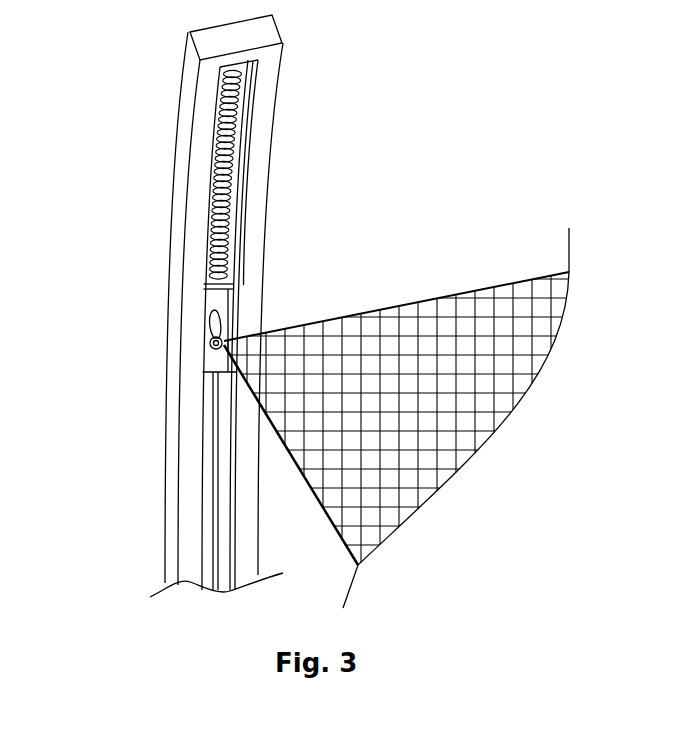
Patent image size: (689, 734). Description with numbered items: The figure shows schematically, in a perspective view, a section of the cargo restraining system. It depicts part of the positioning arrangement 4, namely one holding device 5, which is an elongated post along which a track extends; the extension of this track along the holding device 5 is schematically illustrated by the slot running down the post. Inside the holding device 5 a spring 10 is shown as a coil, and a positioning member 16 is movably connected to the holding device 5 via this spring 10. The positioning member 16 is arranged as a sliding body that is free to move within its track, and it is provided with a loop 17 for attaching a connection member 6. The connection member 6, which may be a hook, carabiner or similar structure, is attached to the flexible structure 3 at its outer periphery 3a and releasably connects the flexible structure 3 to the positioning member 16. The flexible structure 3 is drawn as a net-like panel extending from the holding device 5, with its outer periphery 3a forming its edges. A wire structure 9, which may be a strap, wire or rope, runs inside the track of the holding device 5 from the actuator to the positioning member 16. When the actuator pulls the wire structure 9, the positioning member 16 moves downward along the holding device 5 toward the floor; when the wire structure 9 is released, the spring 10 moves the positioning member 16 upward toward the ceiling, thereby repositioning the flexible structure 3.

The positioning arrangement 4 is at (125, 151).
The holding device 5 is at (250, 210).
The spring 10 is at (238, 132).
The positioning member 16 is at (218, 302).
The loop 17 is at (225, 328).
The connection member 6 is at (207, 340).
The wire structure 9 is at (212, 430).
The flexible structure 3 is at (428, 332).
The outer periphery 3a is at (517, 278).